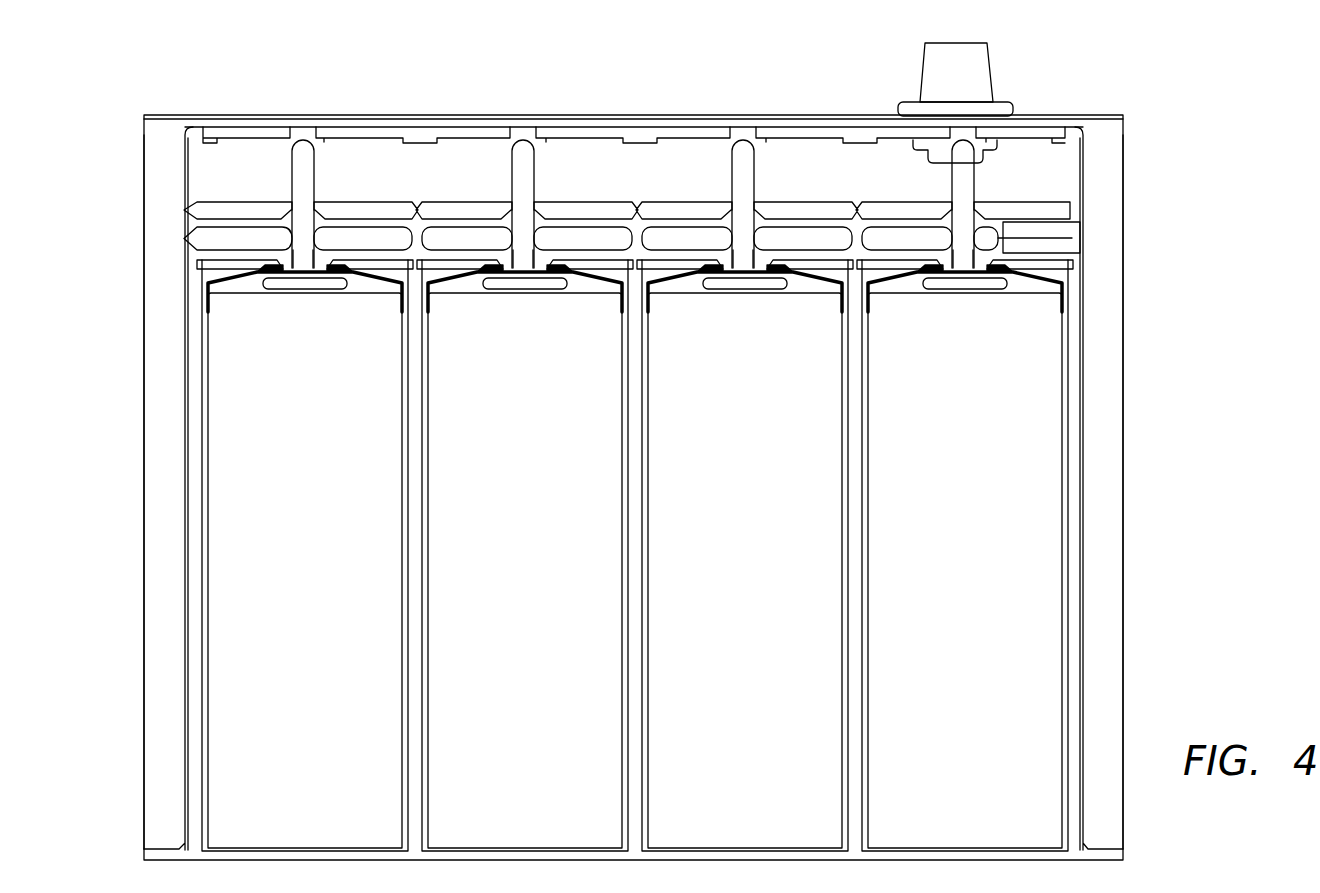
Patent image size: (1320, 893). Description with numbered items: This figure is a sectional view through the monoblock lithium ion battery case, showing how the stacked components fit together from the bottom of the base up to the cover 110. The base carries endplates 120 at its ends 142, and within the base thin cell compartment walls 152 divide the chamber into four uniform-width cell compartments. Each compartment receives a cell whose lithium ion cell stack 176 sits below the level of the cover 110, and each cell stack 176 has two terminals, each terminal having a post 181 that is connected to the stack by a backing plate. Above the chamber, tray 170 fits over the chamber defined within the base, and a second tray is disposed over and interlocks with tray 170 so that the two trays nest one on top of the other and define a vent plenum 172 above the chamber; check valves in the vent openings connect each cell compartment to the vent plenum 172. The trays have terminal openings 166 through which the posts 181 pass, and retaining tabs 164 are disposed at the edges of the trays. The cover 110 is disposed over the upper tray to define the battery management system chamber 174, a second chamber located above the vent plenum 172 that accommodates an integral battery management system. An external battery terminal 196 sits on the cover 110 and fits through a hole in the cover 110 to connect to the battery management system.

The cover 110 is at (1090, 115).
The endplates 120 is at (1105, 203).
The ends 142 is at (1062, 757).
The cell compartment walls 152 is at (420, 490).
The tabs 164 is at (184, 217).
The terminal openings 166 is at (296, 252).
The tray 170 is at (203, 277).
The vent plenum 172 is at (375, 245).
The battery management system (BMS) chamber 174 is at (343, 153).
The lithium ion cell stack 176 is at (542, 587).
The post 181 is at (755, 178).
The external battery terminal 196 is at (975, 75).